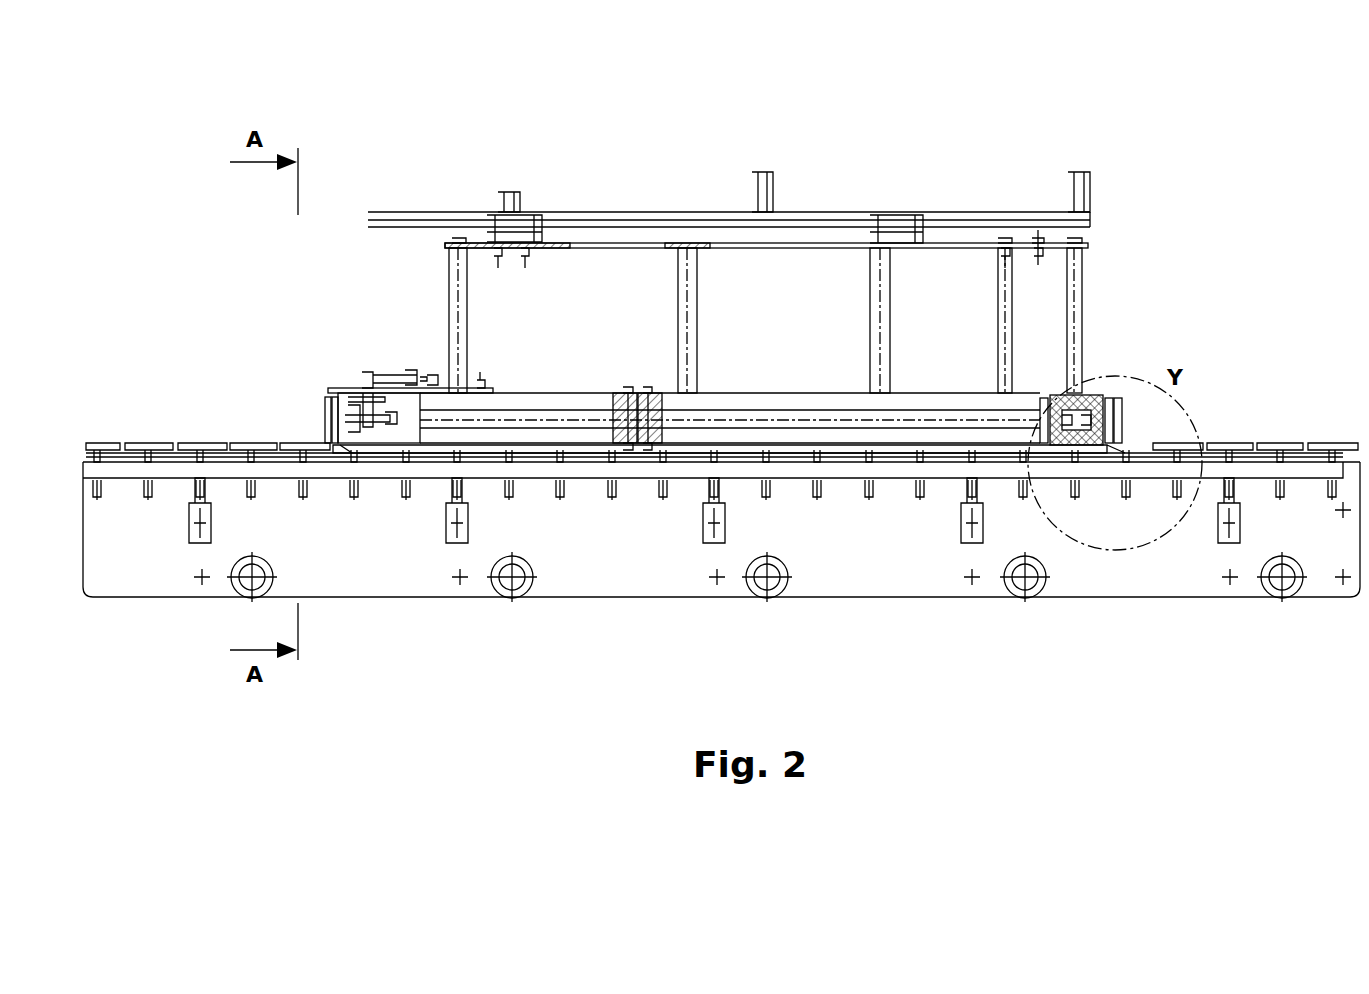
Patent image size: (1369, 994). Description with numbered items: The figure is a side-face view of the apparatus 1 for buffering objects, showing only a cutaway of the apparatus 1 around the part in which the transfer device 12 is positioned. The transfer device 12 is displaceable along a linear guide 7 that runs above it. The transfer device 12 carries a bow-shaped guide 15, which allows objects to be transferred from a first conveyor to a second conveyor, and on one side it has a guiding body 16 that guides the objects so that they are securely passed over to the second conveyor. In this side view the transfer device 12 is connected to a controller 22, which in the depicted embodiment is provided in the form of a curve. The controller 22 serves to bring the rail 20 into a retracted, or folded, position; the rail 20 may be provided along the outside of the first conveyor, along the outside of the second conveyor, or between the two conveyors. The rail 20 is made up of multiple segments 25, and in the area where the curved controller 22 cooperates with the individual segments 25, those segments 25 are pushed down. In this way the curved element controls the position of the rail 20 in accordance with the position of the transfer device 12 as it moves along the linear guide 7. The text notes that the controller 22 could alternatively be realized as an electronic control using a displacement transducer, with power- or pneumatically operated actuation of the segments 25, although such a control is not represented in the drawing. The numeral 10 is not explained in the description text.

The apparatus for buffering objects 1 is at (720, 632).
The linear guide 7 is at (617, 226).
The table plate 10 is at (130, 464).
The transfer device 12 is at (1083, 290).
The bow-shaped guide 15 is at (772, 393).
The guiding body 16 is at (335, 422).
The rail 20 is at (272, 443).
The controller 22 is at (477, 452).
The segments 25 is at (192, 443).